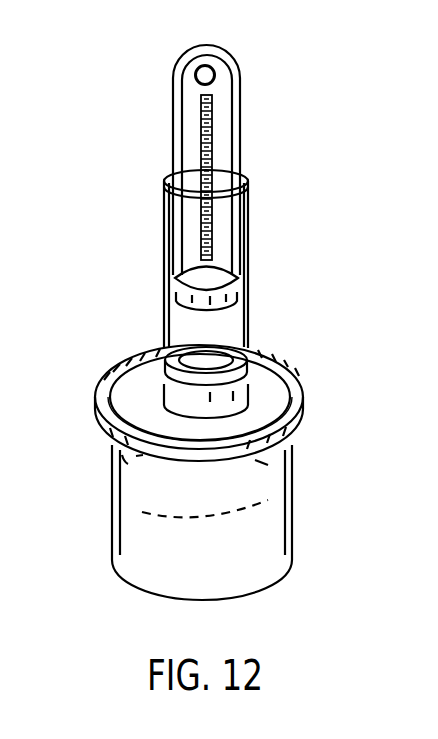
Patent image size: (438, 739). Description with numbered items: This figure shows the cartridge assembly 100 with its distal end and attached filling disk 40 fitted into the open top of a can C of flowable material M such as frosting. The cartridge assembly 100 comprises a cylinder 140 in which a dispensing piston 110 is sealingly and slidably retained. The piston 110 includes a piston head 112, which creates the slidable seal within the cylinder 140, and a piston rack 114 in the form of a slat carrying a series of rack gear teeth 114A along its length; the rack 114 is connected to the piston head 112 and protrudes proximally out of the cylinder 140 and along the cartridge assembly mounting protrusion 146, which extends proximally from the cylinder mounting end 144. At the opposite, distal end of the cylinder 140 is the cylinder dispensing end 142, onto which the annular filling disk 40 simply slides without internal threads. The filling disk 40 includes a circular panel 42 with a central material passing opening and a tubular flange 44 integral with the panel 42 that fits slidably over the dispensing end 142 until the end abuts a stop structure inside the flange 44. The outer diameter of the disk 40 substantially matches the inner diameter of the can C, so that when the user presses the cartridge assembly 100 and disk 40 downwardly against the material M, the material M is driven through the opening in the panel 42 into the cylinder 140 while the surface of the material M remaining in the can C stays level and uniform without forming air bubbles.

The cartridge assembly 100 is at (383, 137).
The cartridge assembly mounting protrusion 146 is at (229, 82).
The piston rack 114 is at (216, 117).
The rack gear teeth 114A is at (213, 152).
The cylinder mounting end 144 is at (248, 186).
The cylinder 140 is at (248, 213).
The dispensing piston 110 is at (184, 300).
The piston head 112 is at (187, 320).
The cylinder dispensing end 142 is at (243, 347).
The filling disk 40 is at (283, 368).
The tubular flange 44 is at (125, 392).
The circular panel 42 is at (268, 408).
The can C is at (238, 492).
The flowable material M is at (252, 545).